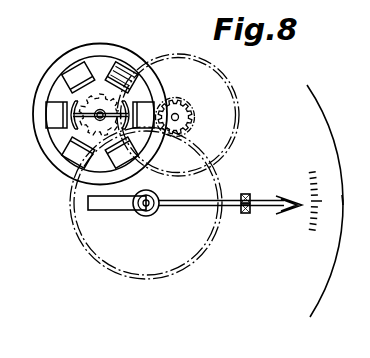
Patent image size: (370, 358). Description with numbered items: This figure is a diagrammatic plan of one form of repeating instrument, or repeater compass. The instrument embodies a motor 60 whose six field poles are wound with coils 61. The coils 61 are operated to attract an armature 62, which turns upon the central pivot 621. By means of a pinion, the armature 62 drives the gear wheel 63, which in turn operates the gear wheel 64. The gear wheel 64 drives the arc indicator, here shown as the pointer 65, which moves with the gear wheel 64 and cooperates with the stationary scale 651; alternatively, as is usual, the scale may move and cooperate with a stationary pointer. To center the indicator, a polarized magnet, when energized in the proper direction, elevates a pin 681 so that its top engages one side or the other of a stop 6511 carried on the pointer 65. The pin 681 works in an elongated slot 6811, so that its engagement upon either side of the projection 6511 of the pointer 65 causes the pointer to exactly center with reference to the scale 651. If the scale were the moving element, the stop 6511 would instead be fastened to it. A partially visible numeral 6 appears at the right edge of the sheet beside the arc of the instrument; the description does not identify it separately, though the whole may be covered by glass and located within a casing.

The motor 60 is at (63, 65).
The coils 61 is at (125, 65).
The armature 62 is at (73, 115).
The central pivot 621 is at (100, 109).
The gear wheel 63 is at (178, 115).
The gear wheel 64 is at (146, 203).
The pointer 65 is at (262, 207).
The stationary scale 651 is at (315, 201).
The stop 6511 is at (243, 199).
The pin 681 is at (245, 213).
The elongated slot 6811 is at (249, 196).
The casing (partially shown) 6 is at (356, 217).